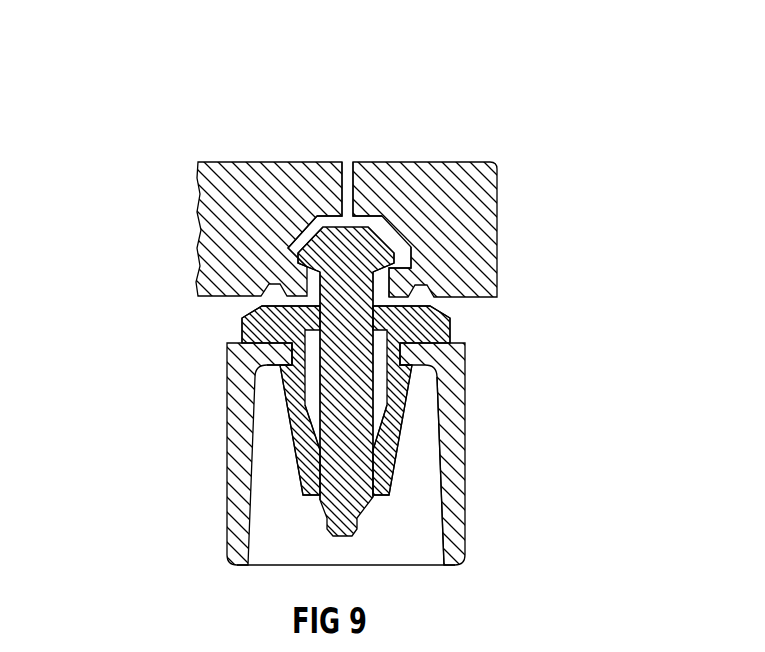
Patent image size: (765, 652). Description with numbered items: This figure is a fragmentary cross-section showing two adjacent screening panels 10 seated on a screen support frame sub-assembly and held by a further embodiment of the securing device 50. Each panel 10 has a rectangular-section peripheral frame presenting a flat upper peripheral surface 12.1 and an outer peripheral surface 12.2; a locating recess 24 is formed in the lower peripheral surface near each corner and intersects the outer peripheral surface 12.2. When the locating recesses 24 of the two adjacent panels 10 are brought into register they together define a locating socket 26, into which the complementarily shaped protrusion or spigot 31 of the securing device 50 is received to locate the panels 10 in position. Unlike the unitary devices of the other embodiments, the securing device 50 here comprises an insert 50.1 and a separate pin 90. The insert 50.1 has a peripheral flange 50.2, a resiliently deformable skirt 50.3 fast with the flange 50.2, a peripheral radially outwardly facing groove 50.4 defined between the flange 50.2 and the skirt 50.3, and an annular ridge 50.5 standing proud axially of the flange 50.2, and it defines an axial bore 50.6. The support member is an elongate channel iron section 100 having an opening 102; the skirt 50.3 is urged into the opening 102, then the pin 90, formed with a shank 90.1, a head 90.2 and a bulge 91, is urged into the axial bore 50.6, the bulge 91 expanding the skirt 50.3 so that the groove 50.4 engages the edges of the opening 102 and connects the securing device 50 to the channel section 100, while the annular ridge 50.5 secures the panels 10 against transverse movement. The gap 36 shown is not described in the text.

The screening panel 10 is at (363, 304).
The upper peripheral surface 12.1 is at (250, 160).
The outer peripheral surface 12.2 is at (357, 183).
The protrusion or spigot 31 is at (328, 210).
The locating socket 26 is at (298, 240).
The locating recess 24 is at (380, 285).
The pin 90 is at (346, 398).
The shank 90.1 is at (307, 270).
The head 90.2 is at (377, 247).
The bulge 91 is at (332, 398).
The securing device 50 is at (334, 402).
The insert 50.1 is at (283, 435).
The peripheral flange 50.2 is at (438, 332).
The resiliently deformable skirt 50.3 is at (408, 407).
The peripheral radially outwardly facing groove 50.4 is at (412, 360).
The annular ridge 50.5 is at (262, 307).
The axial bore 50.6 is at (310, 448).
The elongate channel iron section 100 is at (383, 443).
The opening 102 is at (285, 359).
The annular gap 36 is at (518, 353).